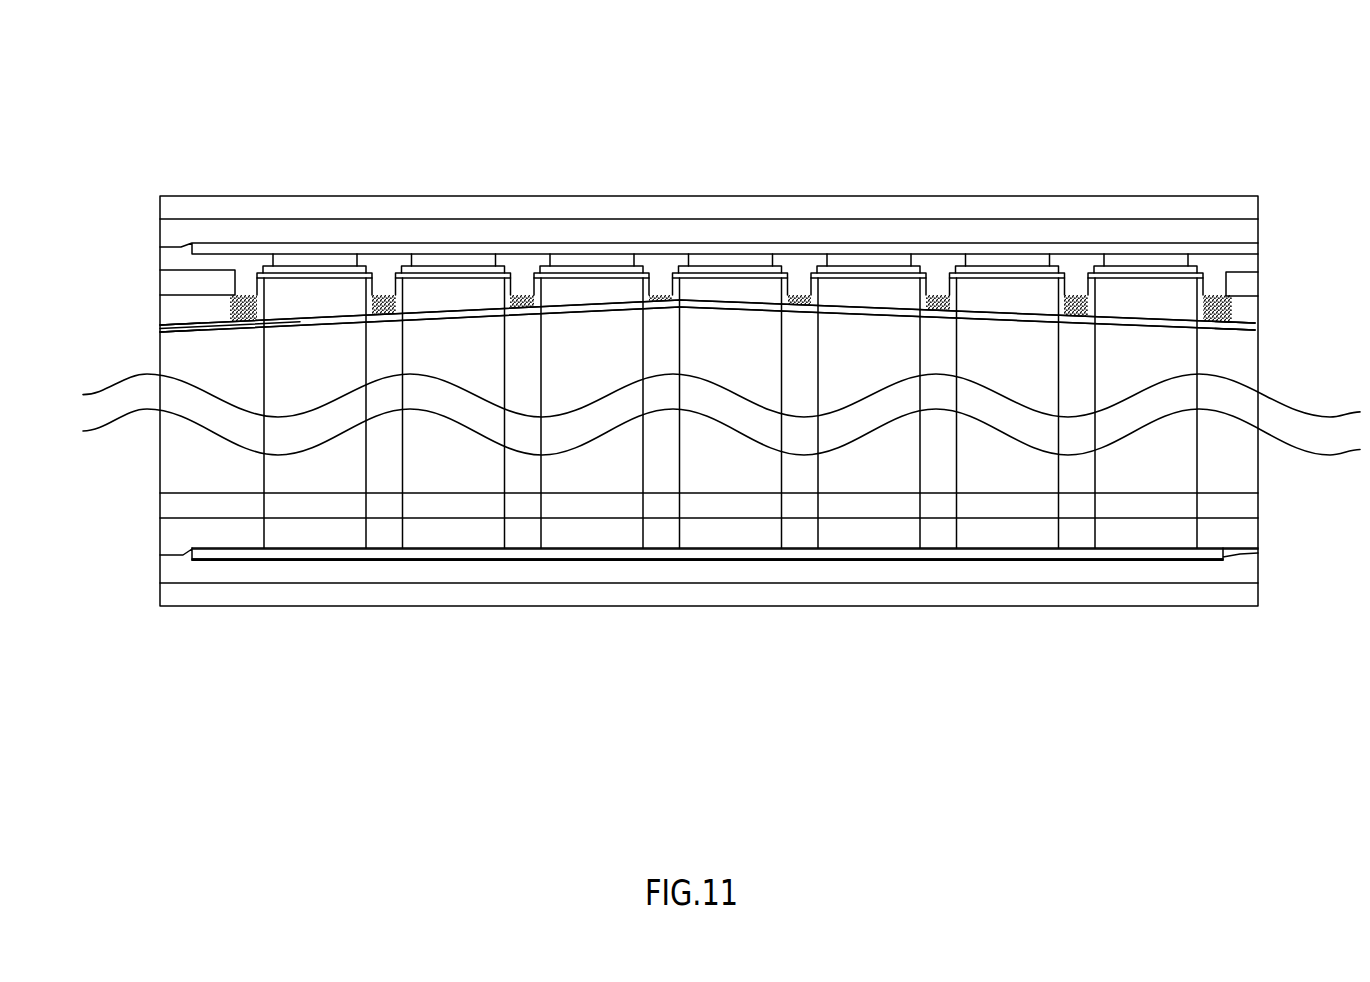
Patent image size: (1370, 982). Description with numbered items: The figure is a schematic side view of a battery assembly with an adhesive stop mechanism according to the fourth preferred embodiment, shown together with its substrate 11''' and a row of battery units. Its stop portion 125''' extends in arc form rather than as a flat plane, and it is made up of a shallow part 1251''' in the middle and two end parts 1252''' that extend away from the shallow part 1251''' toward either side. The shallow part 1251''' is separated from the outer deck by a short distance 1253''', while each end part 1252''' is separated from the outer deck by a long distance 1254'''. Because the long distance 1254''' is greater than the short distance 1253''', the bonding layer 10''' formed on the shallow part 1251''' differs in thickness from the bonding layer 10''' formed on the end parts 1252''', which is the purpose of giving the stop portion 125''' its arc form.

The bonding layer 10''' is at (717, 192).
The substrate 11''' is at (725, 663).
The stop portion 125''' is at (707, 229).
The shallow part 1251''' is at (707, 208).
The end part 1252''' is at (683, 185).
The short distance 1253''' is at (707, 494).
The long distance 1254''' is at (294, 509).